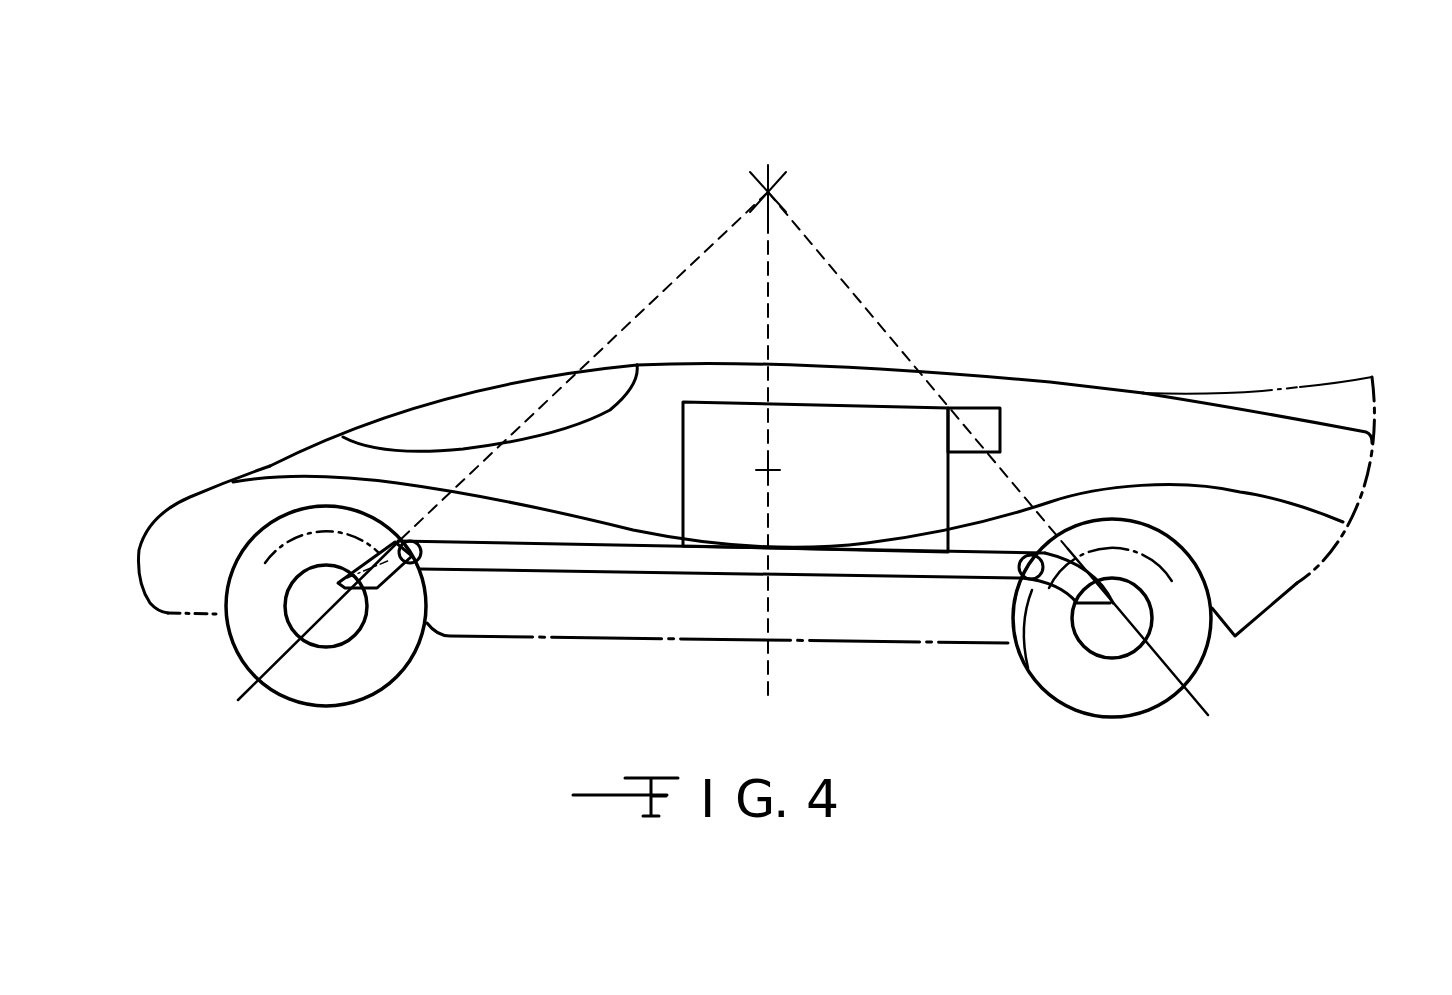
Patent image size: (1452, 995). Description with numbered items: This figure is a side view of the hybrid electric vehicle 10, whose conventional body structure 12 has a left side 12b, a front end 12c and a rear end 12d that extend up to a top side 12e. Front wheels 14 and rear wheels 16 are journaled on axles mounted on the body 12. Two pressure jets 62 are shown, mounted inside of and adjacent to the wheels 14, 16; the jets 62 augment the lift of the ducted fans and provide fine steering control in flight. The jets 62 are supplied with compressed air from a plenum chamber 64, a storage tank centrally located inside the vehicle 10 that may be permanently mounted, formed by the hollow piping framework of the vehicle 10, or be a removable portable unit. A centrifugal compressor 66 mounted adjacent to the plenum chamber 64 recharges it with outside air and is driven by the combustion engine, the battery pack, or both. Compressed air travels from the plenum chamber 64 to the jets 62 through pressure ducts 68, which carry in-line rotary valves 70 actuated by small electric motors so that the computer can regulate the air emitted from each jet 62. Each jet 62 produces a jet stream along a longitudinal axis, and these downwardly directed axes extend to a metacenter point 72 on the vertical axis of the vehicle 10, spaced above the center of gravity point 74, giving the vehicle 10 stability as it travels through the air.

The vehicle 10 is at (1234, 192).
The body structure 12 is at (1174, 426).
The left side 12b is at (817, 612).
The front end 12c is at (158, 560).
The rear end 12d is at (1363, 493).
The top side 12e is at (975, 370).
The front wheels 14 is at (307, 682).
The rear wheels 16 is at (1098, 698).
The pressure jets 62 is at (380, 585).
The plenum chamber 64 is at (913, 405).
The compressor 66 is at (990, 427).
The pressure ducts 68 is at (617, 585).
The rotary valves 70 is at (421, 553).
The metacenter point 72 is at (727, 439).
The center of gravity point 74 is at (831, 483).